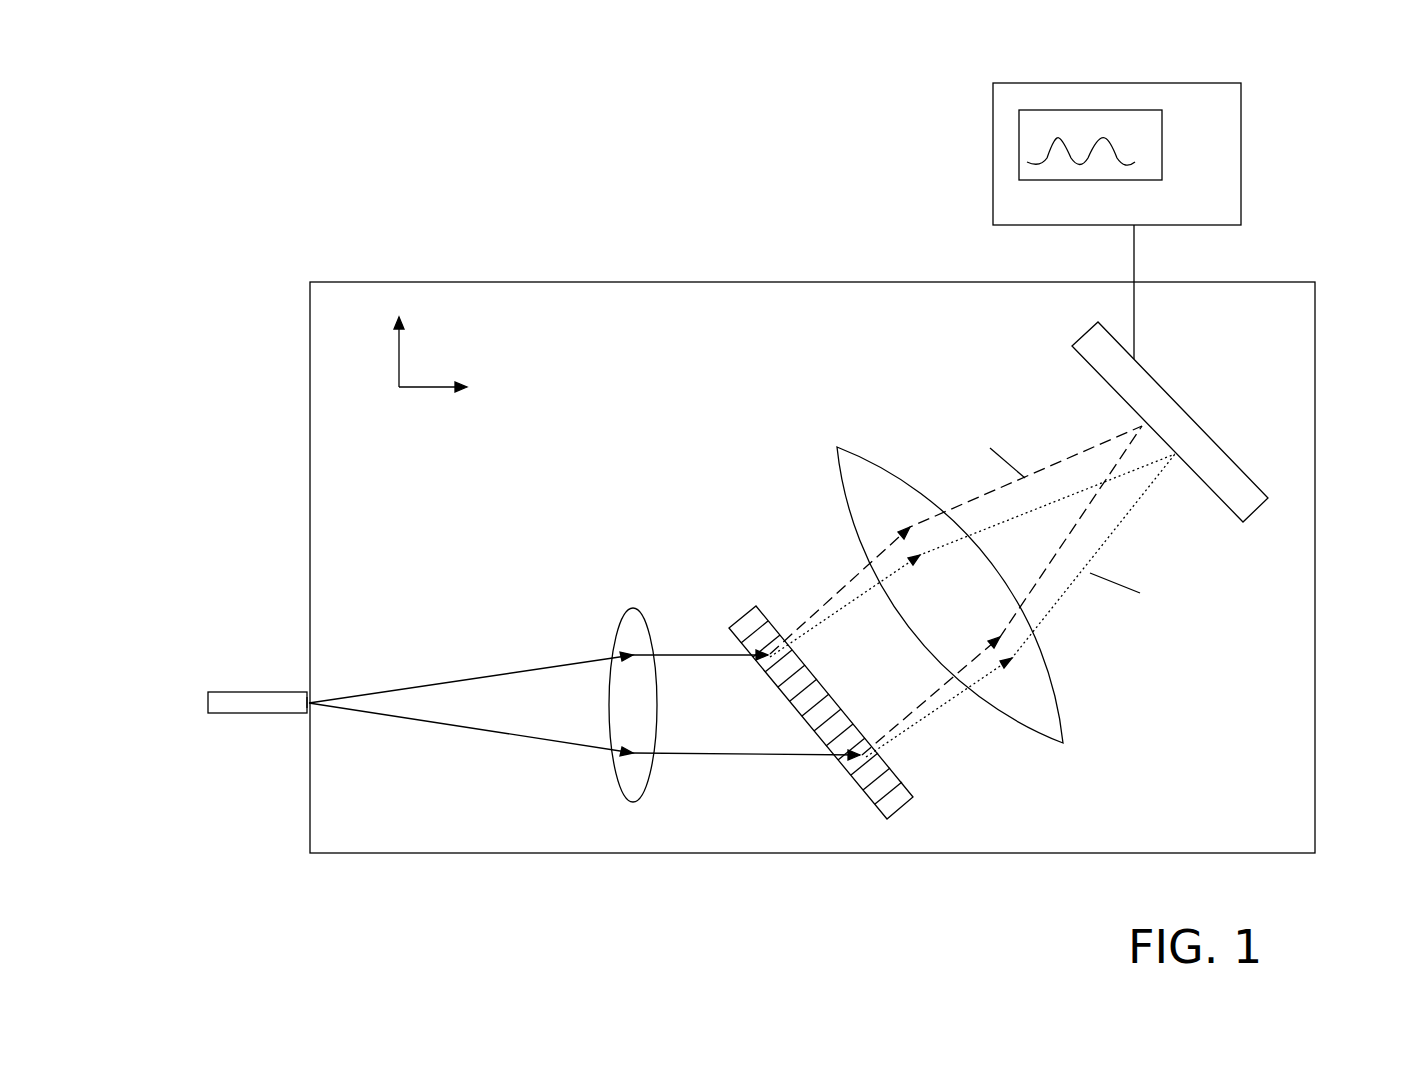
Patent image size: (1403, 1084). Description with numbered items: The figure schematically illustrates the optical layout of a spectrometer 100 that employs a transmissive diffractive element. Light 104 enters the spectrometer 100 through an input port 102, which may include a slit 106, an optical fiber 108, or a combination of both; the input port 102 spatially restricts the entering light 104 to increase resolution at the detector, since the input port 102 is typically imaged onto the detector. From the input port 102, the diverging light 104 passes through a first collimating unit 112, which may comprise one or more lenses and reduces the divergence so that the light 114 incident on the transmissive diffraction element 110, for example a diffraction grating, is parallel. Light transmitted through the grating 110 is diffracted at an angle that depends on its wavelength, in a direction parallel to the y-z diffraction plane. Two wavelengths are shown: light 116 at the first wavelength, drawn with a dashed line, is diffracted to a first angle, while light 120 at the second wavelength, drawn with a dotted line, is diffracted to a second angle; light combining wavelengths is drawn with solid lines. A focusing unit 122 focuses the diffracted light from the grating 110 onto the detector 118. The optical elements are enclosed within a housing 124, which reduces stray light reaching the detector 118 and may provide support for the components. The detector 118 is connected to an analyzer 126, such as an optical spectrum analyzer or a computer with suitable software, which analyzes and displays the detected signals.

The spectrometer 100 is at (252, 248).
The input port 102 is at (326, 686).
The light 104 is at (455, 728).
The slit 106 is at (310, 718).
The optical fiber 108 is at (248, 690).
The transmissive diffraction element 110 is at (740, 618).
The first collimating unit 112 is at (630, 606).
The light incident on the grating 114 is at (817, 758).
The light at wavelength λ1 116 is at (847, 583).
The detector 118 is at (1145, 368).
The light at wavelength λ2 120 is at (942, 705).
The focusing unit 122 is at (838, 468).
The housing 124 is at (620, 282).
The analyzer 126 is at (992, 153).